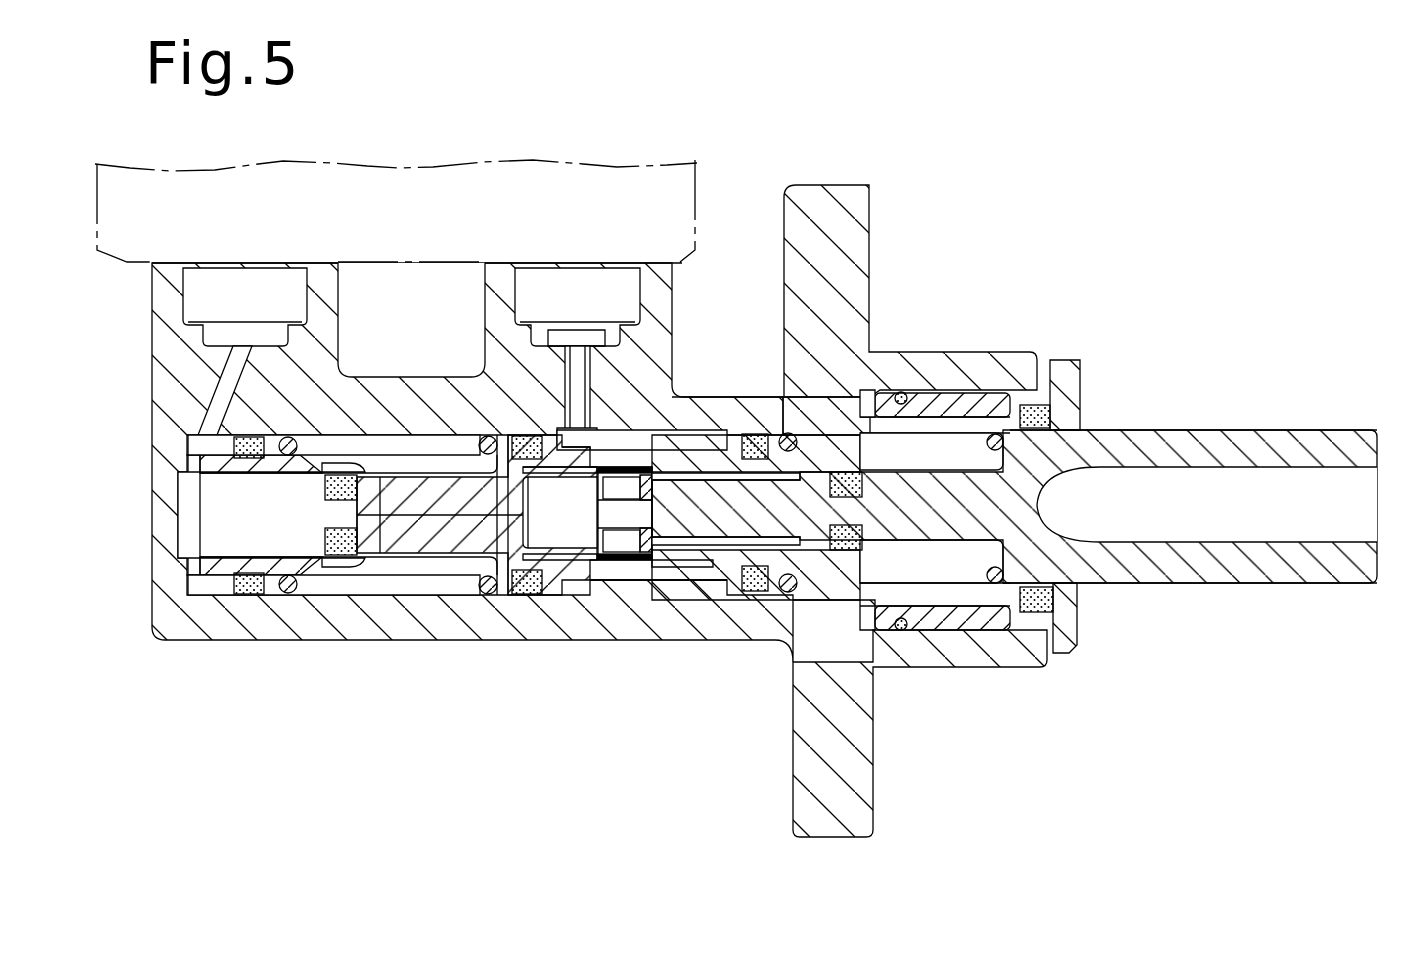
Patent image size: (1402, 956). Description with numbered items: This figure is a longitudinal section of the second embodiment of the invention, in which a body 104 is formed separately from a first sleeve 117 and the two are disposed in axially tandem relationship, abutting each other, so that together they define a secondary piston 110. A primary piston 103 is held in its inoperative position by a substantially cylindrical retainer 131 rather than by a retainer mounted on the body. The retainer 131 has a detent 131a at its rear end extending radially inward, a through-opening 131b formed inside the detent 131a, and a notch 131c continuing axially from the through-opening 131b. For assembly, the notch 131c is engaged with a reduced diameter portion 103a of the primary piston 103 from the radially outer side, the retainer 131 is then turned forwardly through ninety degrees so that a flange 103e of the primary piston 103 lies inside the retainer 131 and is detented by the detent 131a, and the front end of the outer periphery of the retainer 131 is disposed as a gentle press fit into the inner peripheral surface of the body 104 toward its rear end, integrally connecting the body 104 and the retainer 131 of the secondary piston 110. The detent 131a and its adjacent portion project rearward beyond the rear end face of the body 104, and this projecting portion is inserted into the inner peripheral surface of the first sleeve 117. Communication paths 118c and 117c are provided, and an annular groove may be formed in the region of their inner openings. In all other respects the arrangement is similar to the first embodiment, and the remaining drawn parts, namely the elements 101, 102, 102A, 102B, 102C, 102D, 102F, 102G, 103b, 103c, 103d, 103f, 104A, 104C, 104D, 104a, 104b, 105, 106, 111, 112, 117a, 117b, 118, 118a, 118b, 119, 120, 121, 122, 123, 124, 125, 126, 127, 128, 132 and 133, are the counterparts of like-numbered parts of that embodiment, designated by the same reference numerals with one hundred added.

The master cylinder assembly 101 is at (1045, 289).
The cylinder body 102 is at (525, 645).
The cylinder bore 102A is at (633, 607).
The retaining nut 102B is at (1072, 584).
The reservoir port 102C is at (252, 365).
The stopper pin 102D is at (584, 378).
The groove 102F is at (822, 404).
The recess 102G is at (317, 446).
The primary piston 103 is at (1112, 437).
The reduced diameter portion 103a is at (715, 525).
The rod shoulder 103b is at (937, 540).
The rod outer surface 103c is at (1180, 438).
The rod bore 103d is at (1117, 470).
The flange 103e is at (622, 541).
The rod seal 103f is at (858, 488).
The body 104 is at (457, 545).
The piston land 104A is at (388, 565).
The piston skirt 104C is at (597, 597).
The piston head 104D is at (317, 515).
The piston wall 104a is at (537, 577).
The piston wall 104b is at (572, 466).
The retaining plate 105 is at (958, 410).
The pressure chamber 106 is at (425, 565).
The secondary piston 110 is at (673, 590).
The spring chamber 111 is at (588, 513).
The reservoir 112 is at (420, 185).
The first sleeve 117 is at (733, 600).
The sleeve flange 117a is at (748, 435).
The sleeve shoulder 117b is at (695, 470).
The communication path 117c is at (850, 441).
The guide sleeve 118 is at (215, 598).
The guide sleeve wall 118a is at (222, 476).
The guide sleeve end wall 118b is at (199, 480).
The communication path 118c is at (352, 452).
The chamber 119 is at (230, 522).
The return spring 120 is at (918, 442).
The seal 121 is at (434, 442).
The passage 122 is at (247, 430).
The end plate 123 is at (194, 447).
The seal 124 is at (757, 603).
The piston seal 125 is at (322, 491).
The spring seat 126 is at (542, 478).
The stopper shaft 127 is at (641, 449).
The port 128 is at (575, 365).
The retainer 131 is at (643, 598).
The detent 131a is at (672, 476).
The through-opening 131b is at (676, 513).
The notch 131c is at (622, 487).
The groove 132 is at (862, 583).
The seal 133 is at (1040, 620).